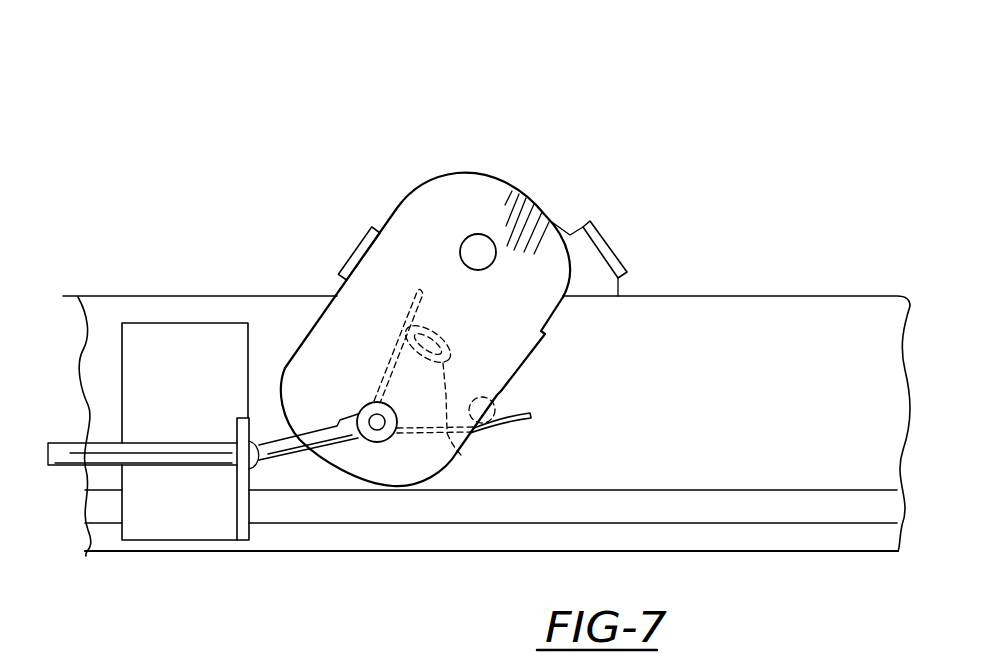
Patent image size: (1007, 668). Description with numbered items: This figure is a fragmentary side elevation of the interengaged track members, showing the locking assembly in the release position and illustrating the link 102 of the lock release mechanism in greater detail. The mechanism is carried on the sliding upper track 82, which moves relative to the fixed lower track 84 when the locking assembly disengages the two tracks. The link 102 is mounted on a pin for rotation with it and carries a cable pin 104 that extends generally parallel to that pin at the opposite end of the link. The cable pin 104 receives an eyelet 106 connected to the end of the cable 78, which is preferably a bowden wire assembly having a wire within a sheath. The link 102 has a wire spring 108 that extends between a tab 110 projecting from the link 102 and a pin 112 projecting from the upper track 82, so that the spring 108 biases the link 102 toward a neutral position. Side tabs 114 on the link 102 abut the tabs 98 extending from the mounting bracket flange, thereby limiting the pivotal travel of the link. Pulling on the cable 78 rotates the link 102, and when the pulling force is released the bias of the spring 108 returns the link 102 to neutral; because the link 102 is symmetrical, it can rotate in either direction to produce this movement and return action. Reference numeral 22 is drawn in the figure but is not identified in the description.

The latch assembly 22 is at (527, 163).
The cable 78 is at (298, 462).
The upper track 82 is at (845, 327).
The lower track 84 is at (845, 522).
The tabs 98 is at (347, 252).
The link 102 is at (400, 227).
The cable pin 104 is at (378, 425).
The eyelets 106 is at (209, 302).
The wire spring 108 is at (528, 420).
The tab 110 is at (462, 456).
The pin 112 is at (494, 410).
The side tabs 114 is at (522, 368).